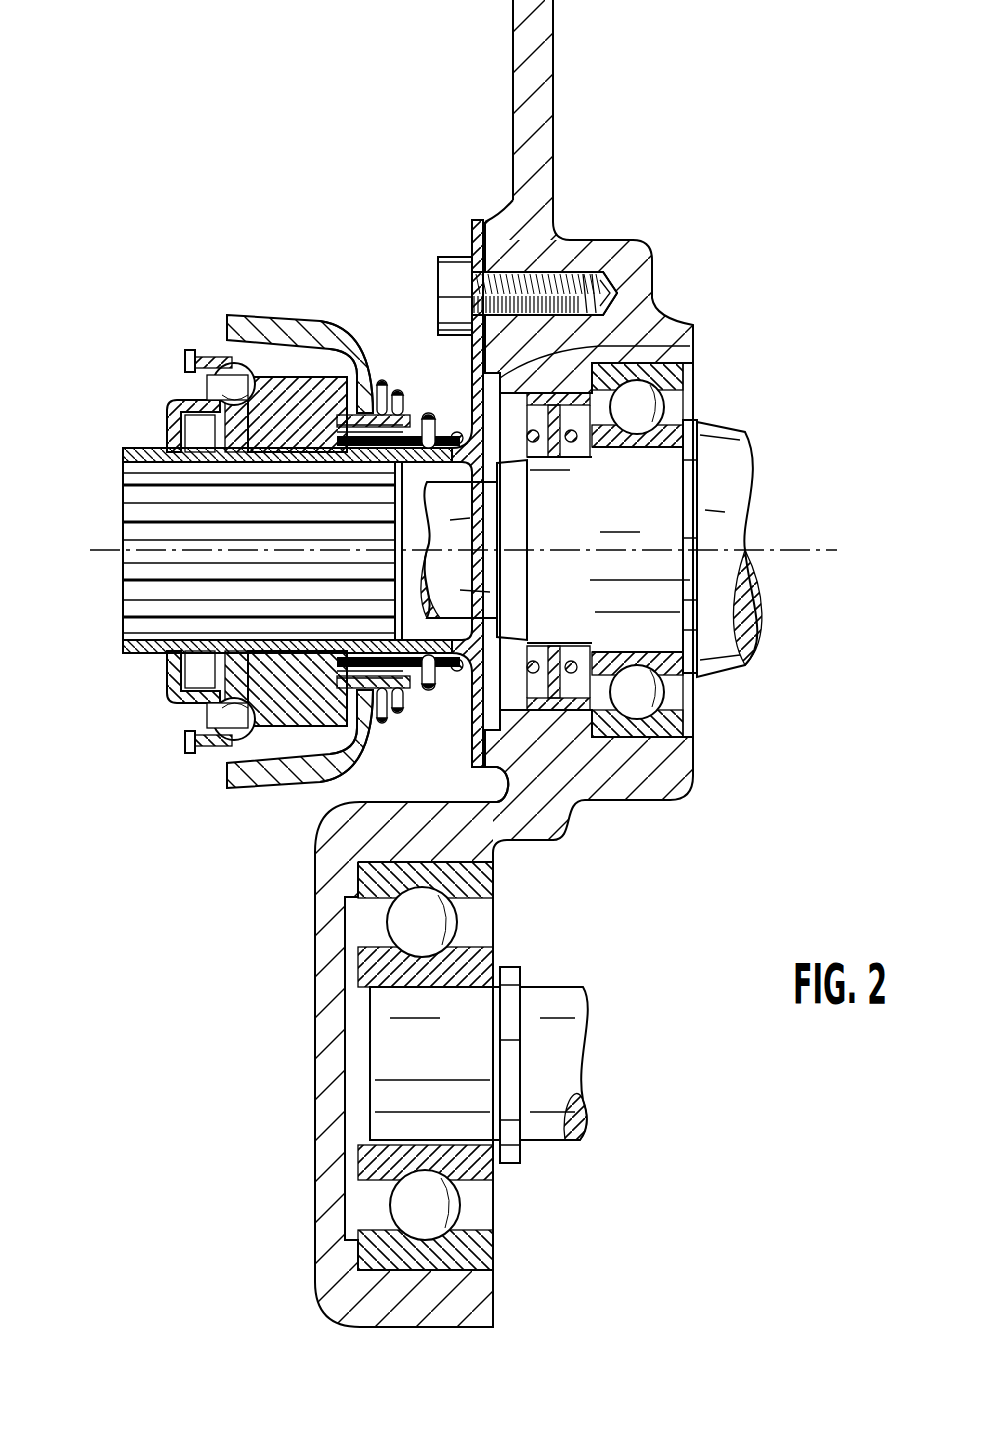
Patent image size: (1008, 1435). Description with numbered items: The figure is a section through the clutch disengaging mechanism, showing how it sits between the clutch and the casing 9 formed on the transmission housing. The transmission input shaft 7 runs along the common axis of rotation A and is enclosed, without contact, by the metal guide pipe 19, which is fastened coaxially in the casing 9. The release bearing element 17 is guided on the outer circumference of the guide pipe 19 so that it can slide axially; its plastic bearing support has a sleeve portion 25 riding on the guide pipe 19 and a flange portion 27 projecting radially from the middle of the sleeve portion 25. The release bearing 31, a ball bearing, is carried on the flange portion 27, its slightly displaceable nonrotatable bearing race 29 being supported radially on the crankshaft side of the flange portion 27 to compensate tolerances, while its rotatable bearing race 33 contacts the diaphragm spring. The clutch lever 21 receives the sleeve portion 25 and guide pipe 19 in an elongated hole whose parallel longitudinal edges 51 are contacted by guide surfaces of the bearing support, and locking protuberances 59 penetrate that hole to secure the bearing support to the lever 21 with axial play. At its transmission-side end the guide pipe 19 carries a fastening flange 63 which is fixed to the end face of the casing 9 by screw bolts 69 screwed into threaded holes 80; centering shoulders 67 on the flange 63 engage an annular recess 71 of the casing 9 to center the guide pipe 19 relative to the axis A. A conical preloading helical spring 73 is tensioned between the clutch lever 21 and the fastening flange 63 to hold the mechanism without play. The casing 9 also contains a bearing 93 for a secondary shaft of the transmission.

The input shaft 7 is at (728, 660).
The casing 9 is at (542, 25).
The release bearing element 17 is at (208, 757).
The guide pipe 19 is at (135, 495).
The clutch lever 21 is at (290, 315).
The sleeve portion 25 is at (173, 693).
The flange portion 27 is at (313, 790).
The nonrotatable bearing race 29 is at (213, 360).
The release bearing 31 is at (186, 360).
The rotatable bearing race 33 is at (170, 402).
The longitudinal edges 51 is at (358, 347).
The locking protuberances 59 is at (398, 708).
The fastening flange 63 is at (472, 238).
The centering shoulders 67 is at (690, 342).
The screw bolts 69 is at (553, 278).
The annular recess 71 is at (492, 720).
The conical preloading helical spring 73 is at (432, 406).
The threaded holes 80 is at (617, 295).
The bearing 93 is at (467, 1265).
The axis of rotation A is at (803, 548).